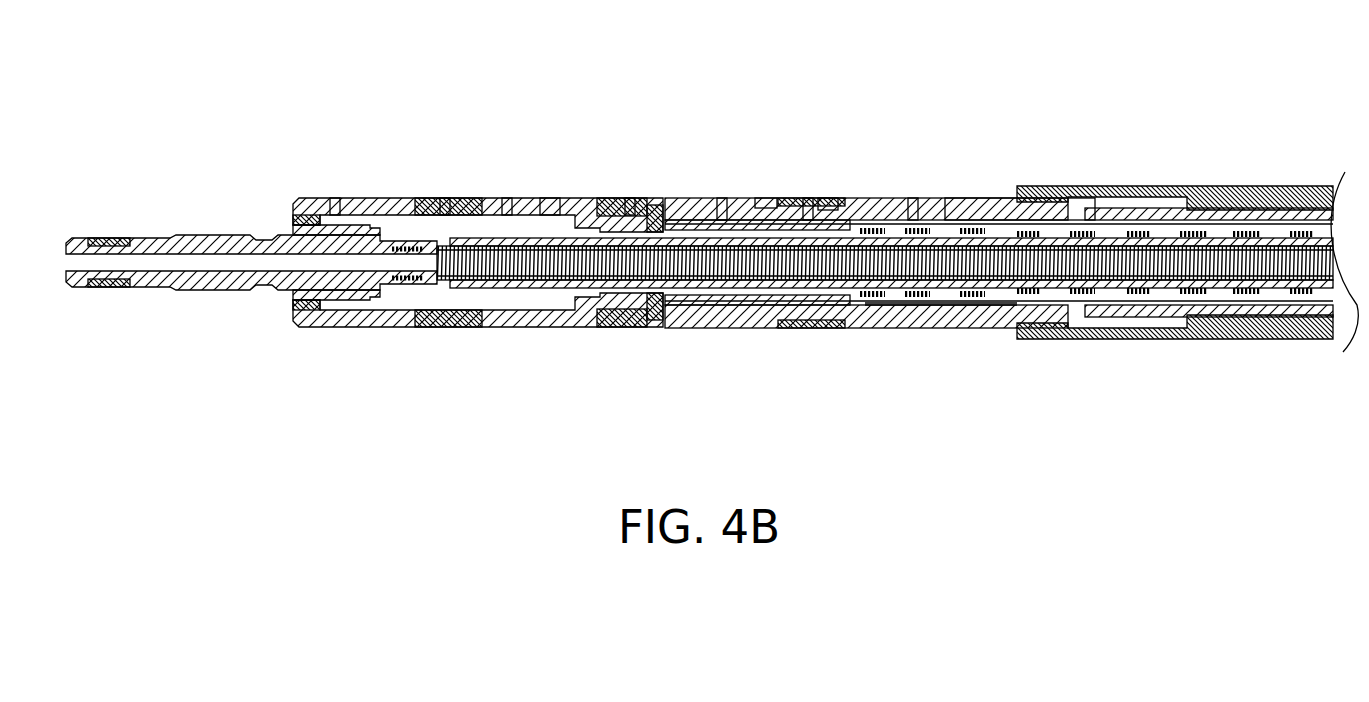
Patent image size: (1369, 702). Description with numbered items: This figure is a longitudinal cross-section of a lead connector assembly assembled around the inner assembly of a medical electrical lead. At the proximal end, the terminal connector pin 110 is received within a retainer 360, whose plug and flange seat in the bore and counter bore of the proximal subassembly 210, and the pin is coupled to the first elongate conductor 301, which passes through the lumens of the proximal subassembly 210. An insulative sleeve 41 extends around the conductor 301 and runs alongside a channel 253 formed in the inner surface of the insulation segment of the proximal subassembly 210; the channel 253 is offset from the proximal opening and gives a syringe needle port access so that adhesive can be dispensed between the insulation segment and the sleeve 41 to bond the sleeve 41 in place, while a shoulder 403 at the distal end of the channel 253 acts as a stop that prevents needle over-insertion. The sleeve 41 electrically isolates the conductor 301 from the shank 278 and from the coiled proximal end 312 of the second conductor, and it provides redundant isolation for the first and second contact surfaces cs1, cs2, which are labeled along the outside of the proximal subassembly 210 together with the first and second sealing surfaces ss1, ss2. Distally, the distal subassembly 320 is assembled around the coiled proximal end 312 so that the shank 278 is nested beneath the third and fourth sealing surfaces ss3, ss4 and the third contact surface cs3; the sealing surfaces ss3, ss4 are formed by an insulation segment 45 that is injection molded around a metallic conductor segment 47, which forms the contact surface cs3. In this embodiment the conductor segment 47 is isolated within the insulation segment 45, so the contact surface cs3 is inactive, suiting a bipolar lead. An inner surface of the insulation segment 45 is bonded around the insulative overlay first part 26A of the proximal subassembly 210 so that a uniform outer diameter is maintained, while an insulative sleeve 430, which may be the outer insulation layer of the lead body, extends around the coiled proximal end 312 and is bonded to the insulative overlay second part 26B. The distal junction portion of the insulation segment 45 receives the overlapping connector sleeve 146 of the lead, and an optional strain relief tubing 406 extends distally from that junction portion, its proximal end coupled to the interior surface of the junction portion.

The terminal connector pin 110 is at (242, 235).
The proximal subassembly 210 is at (405, 366).
The channel 253 is at (432, 207).
The retainer 360 is at (297, 298).
The insulative sleeve 41 is at (467, 290).
The first elongate conductor 301 is at (556, 268).
The distal subassembly 320 is at (845, 428).
The insulative overlay first part 26A is at (713, 308).
The insulative overlay second part 26B is at (820, 303).
The insulative sleeve 430 is at (867, 305).
The shank 278 is at (975, 300).
The coiled proximal end 312 is at (990, 305).
The strain relief tubing 406 is at (1243, 217).
The connector sleeve 146 is at (1208, 195).
The shoulder 403 is at (550, 205).
The insulation segment 45 is at (766, 205).
The conductor segment 47 is at (827, 210).
The sensor station 1 ss1 is at (335, 188).
The first contact surface cs1 is at (445, 188).
The sensor station 2 ss2 is at (507, 188).
The second contact surface cs2 is at (630, 188).
The third sealing surface ss3 is at (722, 188).
The third contact surface cs3 is at (808, 188).
The fourth sealing surface ss4 is at (913, 188).